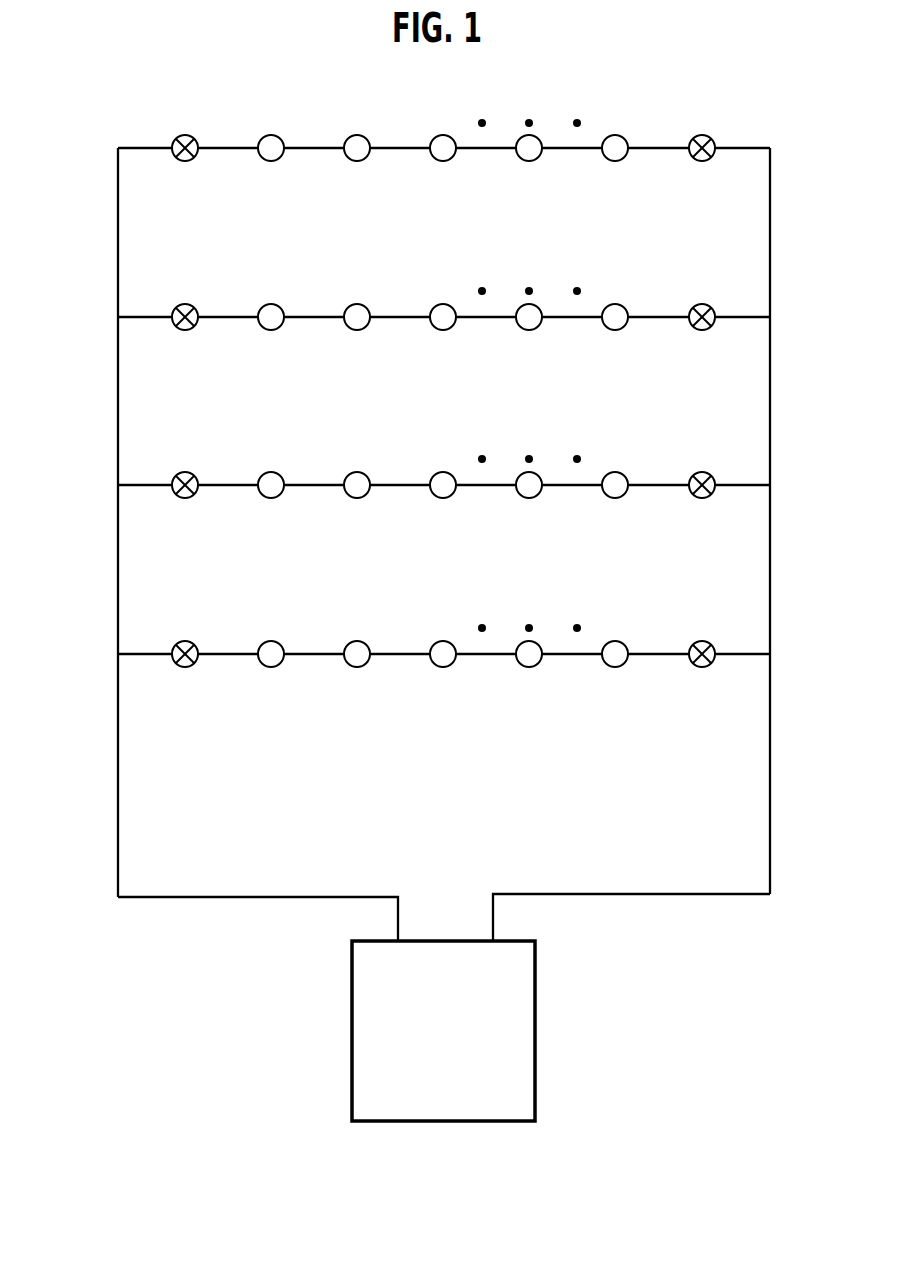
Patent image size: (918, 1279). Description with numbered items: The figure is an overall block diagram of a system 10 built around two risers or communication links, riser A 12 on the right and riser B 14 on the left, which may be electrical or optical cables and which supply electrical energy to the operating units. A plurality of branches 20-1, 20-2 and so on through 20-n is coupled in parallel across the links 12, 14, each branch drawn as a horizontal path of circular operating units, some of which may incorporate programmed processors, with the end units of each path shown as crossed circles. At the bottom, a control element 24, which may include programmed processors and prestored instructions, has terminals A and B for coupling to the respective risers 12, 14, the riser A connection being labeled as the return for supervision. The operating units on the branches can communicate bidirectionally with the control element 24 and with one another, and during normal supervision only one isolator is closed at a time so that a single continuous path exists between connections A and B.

The system 10 is at (752, 102).
The first riser or communication link 12 is at (770, 388).
The second riser or communication link 14 is at (117, 398).
The branch 20-1 is at (164, 96).
The branch 20-2 is at (176, 264).
The branch 20-n is at (177, 599).
The control element 24 is at (428, 1020).